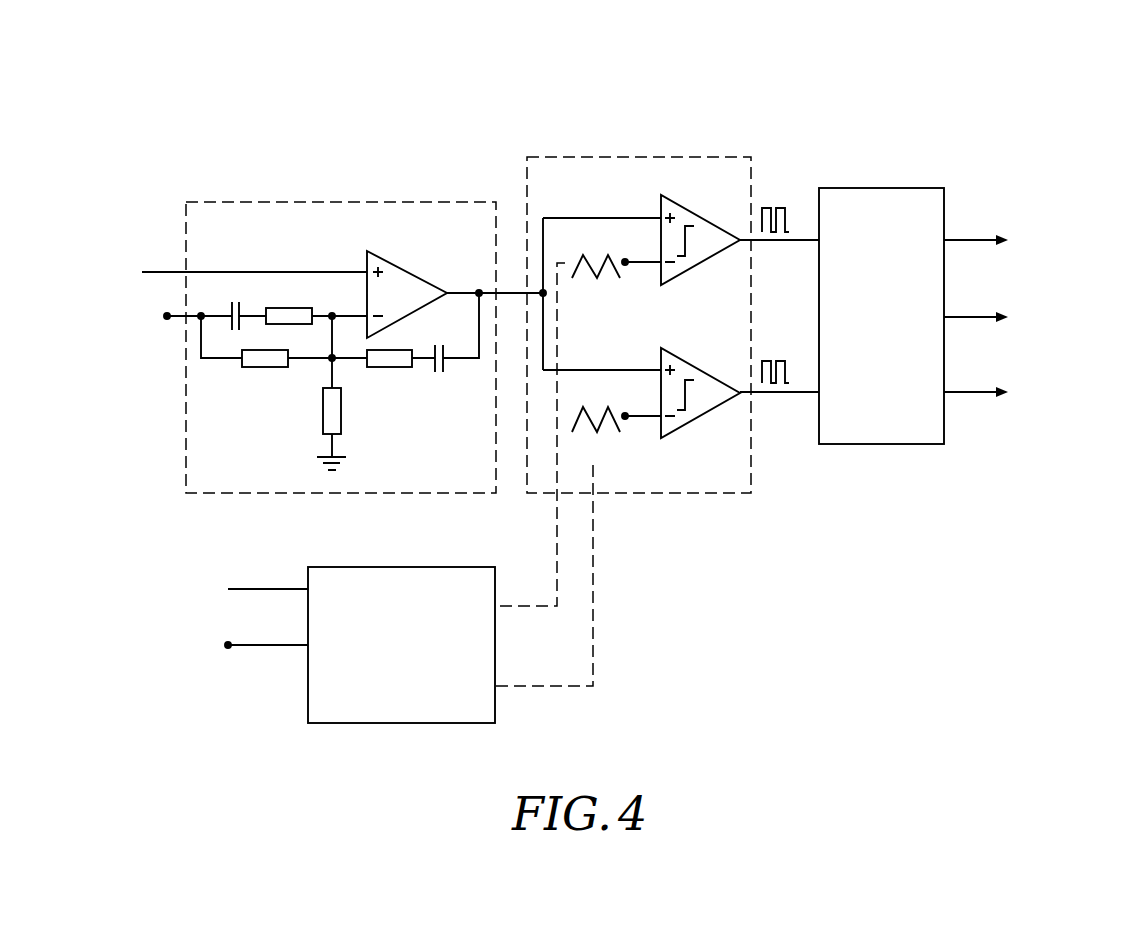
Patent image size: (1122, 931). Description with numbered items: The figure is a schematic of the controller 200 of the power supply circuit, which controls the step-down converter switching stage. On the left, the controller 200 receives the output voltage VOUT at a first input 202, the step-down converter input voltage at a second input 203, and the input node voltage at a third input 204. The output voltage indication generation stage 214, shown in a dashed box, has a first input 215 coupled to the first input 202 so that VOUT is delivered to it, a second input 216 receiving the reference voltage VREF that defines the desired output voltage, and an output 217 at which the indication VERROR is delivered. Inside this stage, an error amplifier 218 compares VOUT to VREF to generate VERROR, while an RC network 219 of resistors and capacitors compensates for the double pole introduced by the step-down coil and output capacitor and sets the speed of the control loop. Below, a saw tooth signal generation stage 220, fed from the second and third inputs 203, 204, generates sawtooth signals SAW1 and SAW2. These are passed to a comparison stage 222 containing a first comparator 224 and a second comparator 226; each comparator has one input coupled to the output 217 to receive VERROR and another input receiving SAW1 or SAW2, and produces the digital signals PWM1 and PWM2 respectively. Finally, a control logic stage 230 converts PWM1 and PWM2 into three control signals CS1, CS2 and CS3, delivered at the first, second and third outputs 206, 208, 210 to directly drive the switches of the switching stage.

The controller 200 is at (872, 96).
The first input 202 is at (186, 315).
The second input 203 is at (268, 589).
The third input 204 is at (278, 645).
The first output 206 is at (945, 237).
The second output 208 is at (945, 313).
The third output 210 is at (945, 388).
The output voltage indication generation stage 214 is at (319, 321).
The first input 215 is at (188, 314).
The second input 216 is at (186, 270).
The output 217 is at (497, 293).
The error amplifier 218 is at (390, 280).
The RC network 219 is at (381, 408).
The saw tooth signal generation stage 220 is at (402, 567).
The comparison stage 222 is at (668, 157).
The first comparator 224 is at (697, 254).
The second comparator 226 is at (697, 405).
The control logic stage 230 is at (881, 316).